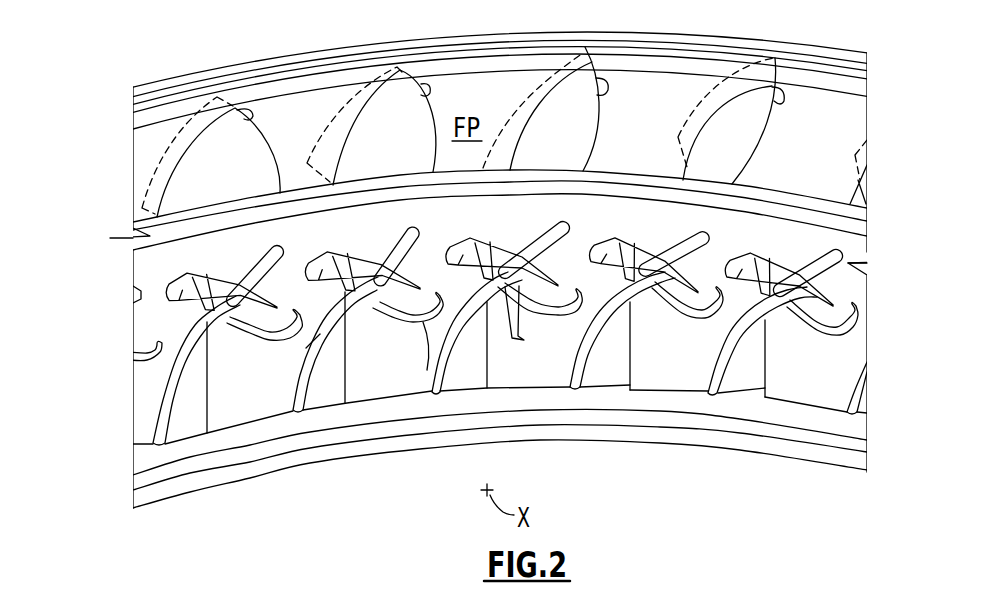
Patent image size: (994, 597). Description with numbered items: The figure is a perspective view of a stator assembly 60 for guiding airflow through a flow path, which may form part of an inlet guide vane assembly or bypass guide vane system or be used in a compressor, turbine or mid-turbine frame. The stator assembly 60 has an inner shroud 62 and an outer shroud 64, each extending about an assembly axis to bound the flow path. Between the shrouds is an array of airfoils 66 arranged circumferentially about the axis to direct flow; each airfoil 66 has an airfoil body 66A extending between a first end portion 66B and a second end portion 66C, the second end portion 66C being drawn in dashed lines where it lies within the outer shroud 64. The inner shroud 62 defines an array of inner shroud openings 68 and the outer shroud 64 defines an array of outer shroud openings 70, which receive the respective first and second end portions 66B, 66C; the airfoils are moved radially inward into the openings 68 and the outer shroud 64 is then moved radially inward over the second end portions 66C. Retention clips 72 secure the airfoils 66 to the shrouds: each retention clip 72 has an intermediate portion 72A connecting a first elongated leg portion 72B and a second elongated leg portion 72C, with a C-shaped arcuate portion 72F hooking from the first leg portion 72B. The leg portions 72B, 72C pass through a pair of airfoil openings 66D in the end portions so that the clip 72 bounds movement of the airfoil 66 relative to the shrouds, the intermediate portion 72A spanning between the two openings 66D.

The stator assembly 60 is at (104, 72).
The inner shroud 62 is at (116, 473).
The outer shroud 64 is at (202, 66).
The airfoil 66 is at (504, 110).
The airfoil body 66A is at (397, 122).
The first end portion 66B is at (318, 396).
The second end portion 66C is at (400, 70).
The airfoil opening 66D is at (512, 335).
The inner shroud opening 68 is at (168, 388).
The outer shroud opening 70 is at (257, 117).
The retention clip 72 is at (471, 301).
The intermediate portion 72A is at (312, 340).
The first elongated leg portion 72B is at (345, 256).
The second elongated leg portion 72C is at (368, 308).
The arcuate portion 72F is at (427, 372).